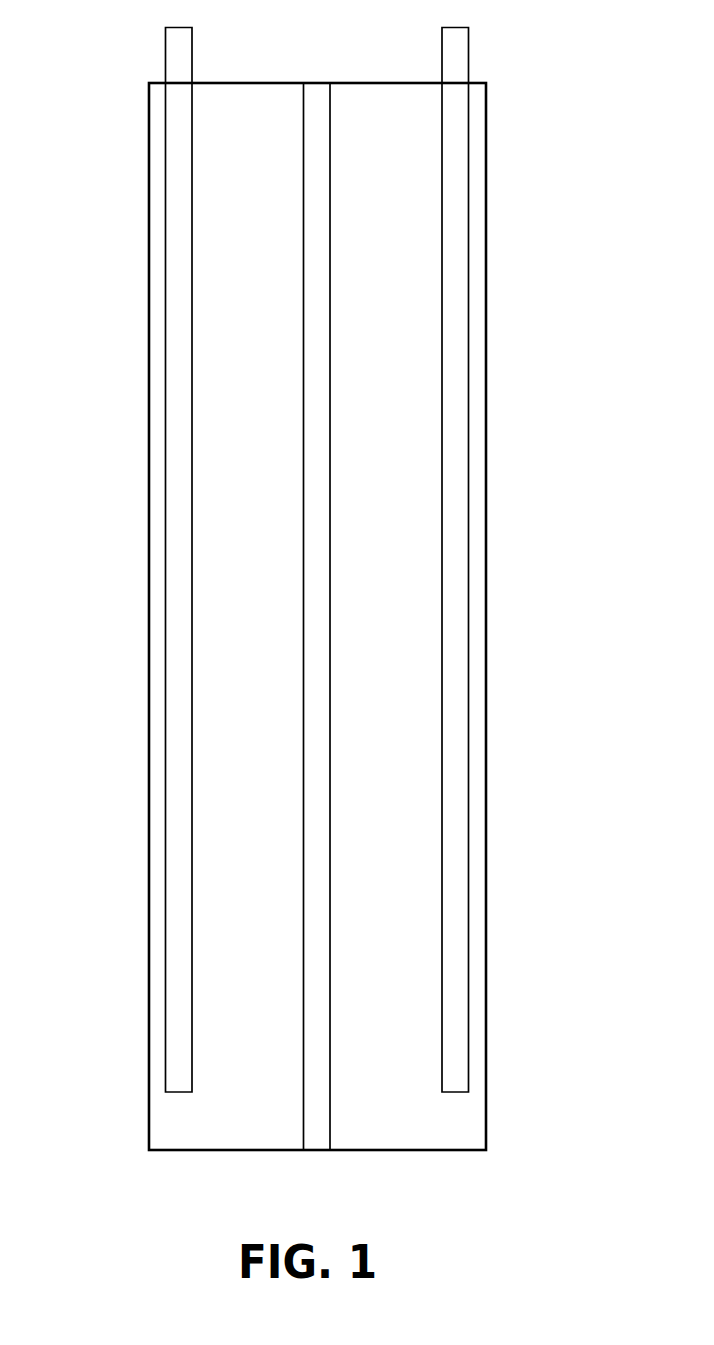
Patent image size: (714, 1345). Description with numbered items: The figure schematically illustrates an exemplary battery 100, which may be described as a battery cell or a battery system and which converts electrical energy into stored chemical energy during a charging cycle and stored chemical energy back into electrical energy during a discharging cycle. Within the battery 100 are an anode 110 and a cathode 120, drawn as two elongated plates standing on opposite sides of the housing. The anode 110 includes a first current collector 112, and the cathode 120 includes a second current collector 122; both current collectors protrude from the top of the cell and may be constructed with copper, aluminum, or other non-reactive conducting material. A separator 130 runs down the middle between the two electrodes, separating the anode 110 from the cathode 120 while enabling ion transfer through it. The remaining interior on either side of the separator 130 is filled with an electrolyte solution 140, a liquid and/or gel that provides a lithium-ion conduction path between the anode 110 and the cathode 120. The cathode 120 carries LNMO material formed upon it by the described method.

The battery 100 is at (486, 228).
The anode 110 is at (182, 294).
The first current collector 112 is at (165, 68).
The cathode 120 is at (456, 353).
The second current collector 122 is at (469, 57).
The separator 130 is at (331, 1113).
The electrolyte solution 140 is at (257, 685).